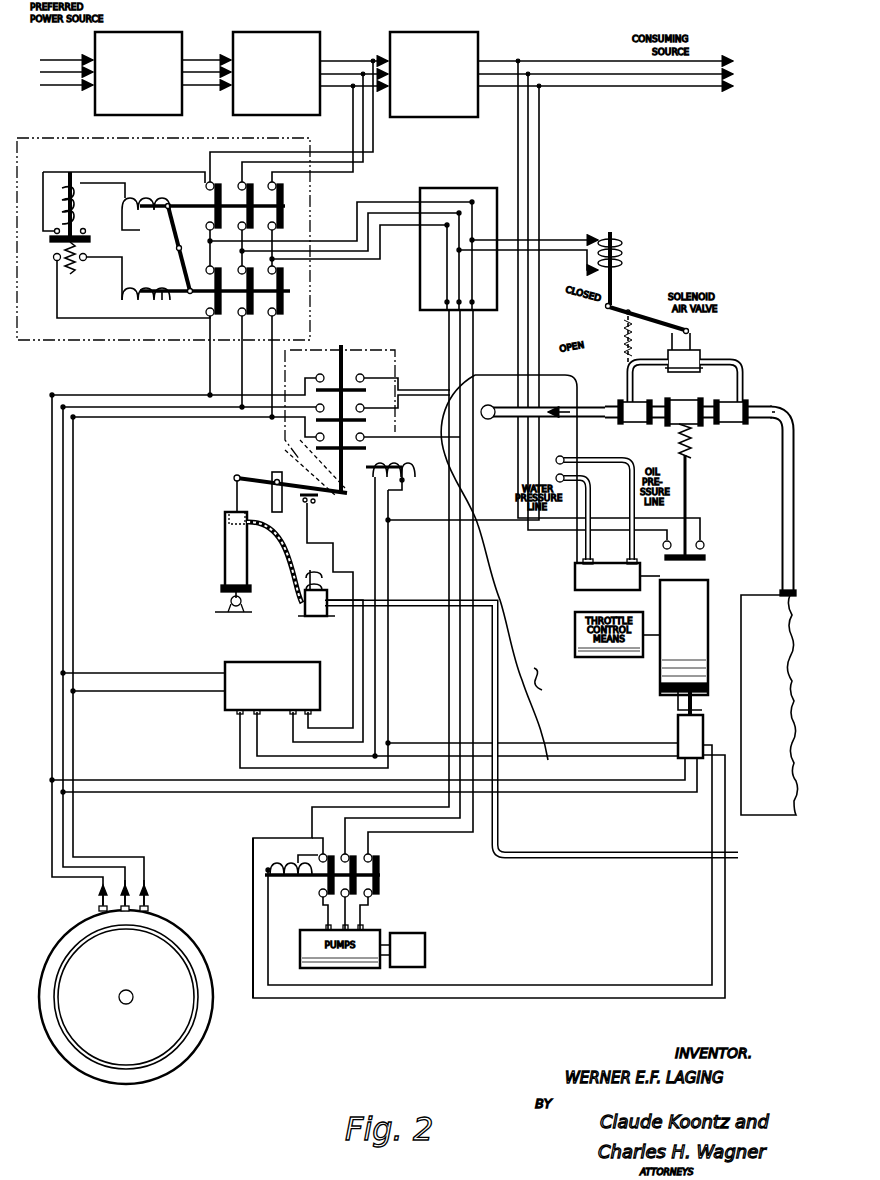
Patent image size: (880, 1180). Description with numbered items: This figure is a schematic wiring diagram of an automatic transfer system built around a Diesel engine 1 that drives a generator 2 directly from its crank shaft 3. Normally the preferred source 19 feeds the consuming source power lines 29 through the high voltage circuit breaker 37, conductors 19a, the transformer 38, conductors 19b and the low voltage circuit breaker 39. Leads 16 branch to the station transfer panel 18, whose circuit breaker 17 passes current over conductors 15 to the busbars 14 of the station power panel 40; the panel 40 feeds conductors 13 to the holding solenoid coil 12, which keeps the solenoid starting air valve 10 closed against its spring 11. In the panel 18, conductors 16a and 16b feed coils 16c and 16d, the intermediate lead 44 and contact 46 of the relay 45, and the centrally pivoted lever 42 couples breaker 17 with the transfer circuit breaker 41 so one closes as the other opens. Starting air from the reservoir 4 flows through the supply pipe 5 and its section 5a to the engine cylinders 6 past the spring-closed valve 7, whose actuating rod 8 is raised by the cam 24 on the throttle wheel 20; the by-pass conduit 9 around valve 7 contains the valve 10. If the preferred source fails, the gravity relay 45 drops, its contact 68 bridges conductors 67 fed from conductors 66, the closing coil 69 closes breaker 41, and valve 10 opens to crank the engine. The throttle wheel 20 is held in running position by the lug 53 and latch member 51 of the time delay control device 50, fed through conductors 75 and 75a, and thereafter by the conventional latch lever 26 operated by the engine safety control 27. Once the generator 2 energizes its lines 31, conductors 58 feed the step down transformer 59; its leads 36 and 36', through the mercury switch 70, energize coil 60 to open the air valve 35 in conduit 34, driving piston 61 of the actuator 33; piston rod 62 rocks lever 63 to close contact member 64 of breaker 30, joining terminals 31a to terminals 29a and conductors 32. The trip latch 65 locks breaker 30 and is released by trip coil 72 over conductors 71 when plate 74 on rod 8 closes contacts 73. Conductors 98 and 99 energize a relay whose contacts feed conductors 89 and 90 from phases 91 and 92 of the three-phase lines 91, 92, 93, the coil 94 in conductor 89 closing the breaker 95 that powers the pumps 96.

The Diesel engine 1 is at (542, 710).
The generator 2 is at (187, 938).
The crank shaft 3 is at (134, 996).
The air pressure reservoir 4 is at (753, 602).
The supply pipe 5 is at (782, 506).
The air pipe section 5a is at (584, 426).
The cylinders 6 is at (569, 398).
The spring-closed valve 7 is at (696, 422).
The valve actuating rod 8 is at (688, 489).
The by-pass conduit 9 is at (645, 385).
The solenoid closed starting air valve 10 is at (699, 348).
The spring means 11 is at (624, 347).
The solenoid actuator 12 is at (624, 252).
The conductors 13 is at (560, 244).
The busbars 14 is at (470, 274).
The conductors 15 is at (319, 258).
The conductors 16 is at (355, 132).
The conductor 16a is at (138, 183).
The conductor 16b is at (168, 182).
The breaker closing coil 16c is at (134, 228).
The solenoid coil 16d is at (72, 183).
The circuit breaker 17 is at (286, 206).
The station transfer panel 18 is at (41, 138).
The preferred electrical source 19 is at (47, 86).
The preferred circuit conductors 19a is at (196, 82).
The preferred circuit conductors 19b is at (340, 82).
The throttle wheel 20 is at (704, 662).
The cam member 24 is at (660, 692).
The latch means 26 is at (662, 584).
The safety control 27 is at (612, 588).
The consuming source power lines 29 is at (564, 86).
The contact terminals 29a is at (368, 404).
The circuit disconnect breaker 30 is at (393, 355).
The auxiliary source circuit 31 is at (138, 408).
The contact terminals 31a is at (314, 375).
The conductors 32 is at (519, 126).
The air operated piston actuator 33 is at (222, 554).
The air supply conduit 34 is at (282, 602).
The solenoid actuated air admission valve 35 is at (309, 616).
The energizing circuit 36 is at (328, 671).
The leads 36' is at (336, 615).
The high voltage circuit breaker 37 is at (173, 34).
The transformer 38 is at (311, 34).
The low voltage circuit breaker 39 is at (468, 34).
The station power panel 40 is at (478, 190).
The transfer circuit breaker 41 is at (294, 291).
The centrally pivoted lever 42 is at (178, 260).
The intermediate lead 44 is at (84, 230).
The solenoid operated relay device 45 is at (88, 240).
The contact 46 is at (46, 230).
The time delay control device 50 is at (705, 730).
The latch member 51 is at (672, 716).
The lug 53 is at (701, 699).
The conductors 58 is at (189, 692).
The step down transformer 59 is at (294, 666).
The solenoid coil 60 is at (308, 579).
The piston 61 is at (226, 528).
The piston rod 62 is at (230, 492).
The lever 63 is at (264, 480).
The circuit breaker contact member 64 is at (344, 346).
The solenoid operated trip latch 65 is at (370, 462).
The conductors 66 is at (243, 356).
The conductors 67 is at (197, 318).
The contact member 68 is at (48, 257).
The solenoid breaker closing coil 69 is at (128, 310).
The mercury switch 70 is at (318, 504).
The conductors 71 is at (410, 520).
The solenoid trip coil 72 is at (402, 468).
The switch contacts 73 is at (706, 535).
The contact plate 74 is at (707, 561).
The conductor 75 is at (615, 746).
The conductor 75a is at (580, 738).
The conductor 89 is at (267, 918).
The conductor 90 is at (253, 906).
The phase line 91 is at (380, 820).
The phase line 92 is at (312, 811).
The phase line 93 is at (424, 830).
The solenoid coil 94 is at (270, 870).
The circuit breaker 95 is at (380, 877).
The pumps 96 is at (405, 928).
The energizing conductor 98 is at (164, 792).
The energizing conductor 99 is at (166, 783).